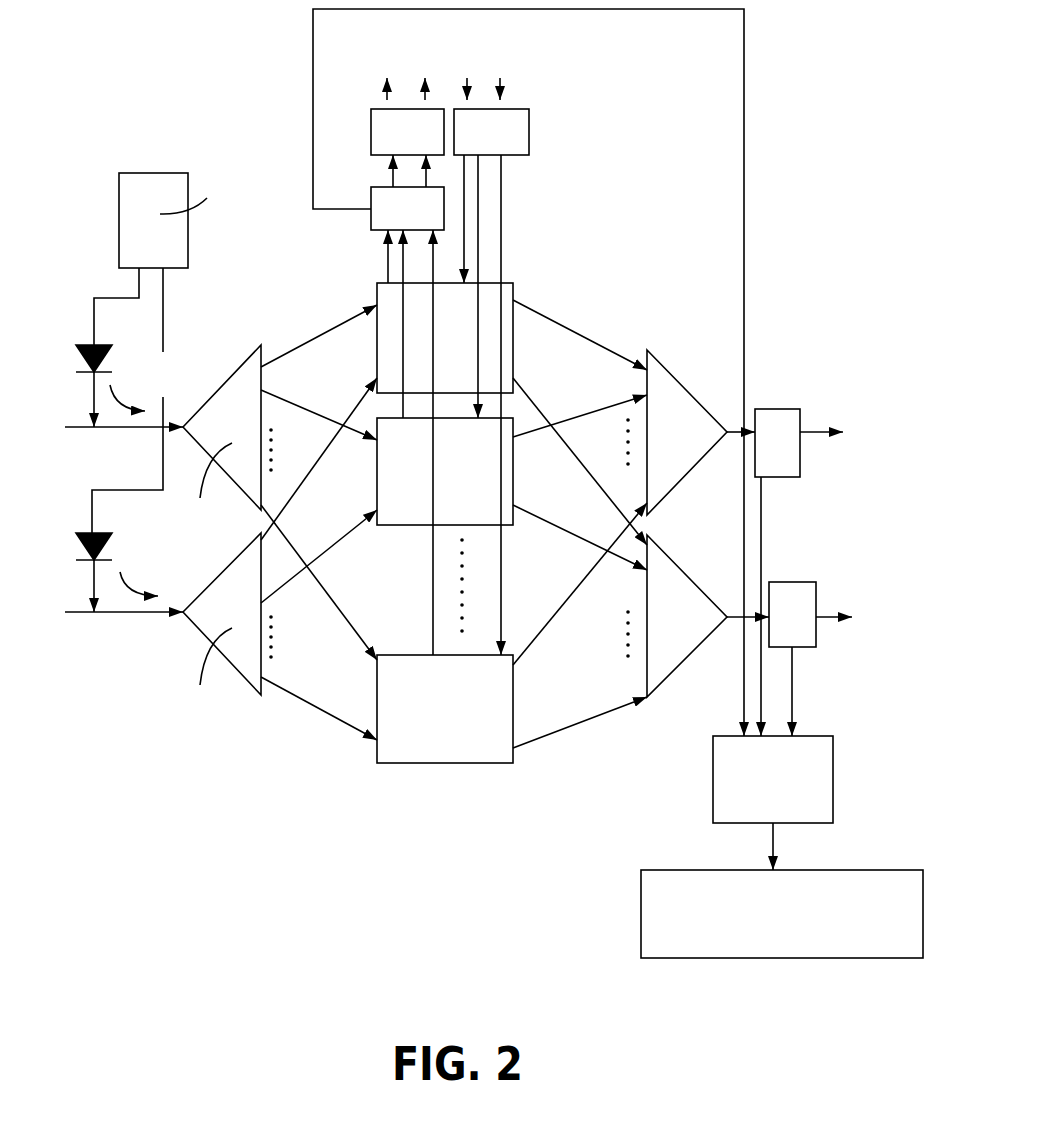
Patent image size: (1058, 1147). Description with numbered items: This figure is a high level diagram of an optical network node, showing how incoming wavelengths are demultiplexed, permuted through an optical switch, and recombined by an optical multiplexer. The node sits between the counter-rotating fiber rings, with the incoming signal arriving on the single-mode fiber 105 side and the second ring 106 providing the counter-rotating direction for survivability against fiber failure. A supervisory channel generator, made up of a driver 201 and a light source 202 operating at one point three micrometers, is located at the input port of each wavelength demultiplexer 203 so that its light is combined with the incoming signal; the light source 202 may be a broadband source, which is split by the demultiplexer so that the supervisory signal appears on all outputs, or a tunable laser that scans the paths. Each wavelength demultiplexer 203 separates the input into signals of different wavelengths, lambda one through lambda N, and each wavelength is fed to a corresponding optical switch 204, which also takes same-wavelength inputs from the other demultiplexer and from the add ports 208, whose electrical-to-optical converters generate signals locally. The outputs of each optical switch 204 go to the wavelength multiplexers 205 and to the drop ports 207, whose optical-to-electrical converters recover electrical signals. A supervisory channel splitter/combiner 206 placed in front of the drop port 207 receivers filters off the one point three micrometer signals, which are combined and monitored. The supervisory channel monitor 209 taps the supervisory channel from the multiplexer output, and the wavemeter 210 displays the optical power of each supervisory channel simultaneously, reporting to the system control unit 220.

The counter-rotating ring (clockwise single-mode fiber) 105 is at (828, 428).
The counter-rotating ring (counterclockwise fiber) 106 is at (115, 435).
The driver 201 is at (205, 204).
The light source 202 is at (110, 440).
The wavelength demultiplexer 203 is at (248, 366).
The optical switch 204 is at (515, 313).
The wavelength multiplexer 205 is at (688, 402).
The supervisory channel splitter/combiner 206 is at (371, 233).
The wavelength drop port 207 is at (384, 116).
The wavelength add port 208 is at (509, 366).
The supervisory channel monitor 209 is at (800, 452).
The wavemeter 210 is at (820, 736).
The system control unit 220 is at (873, 870).